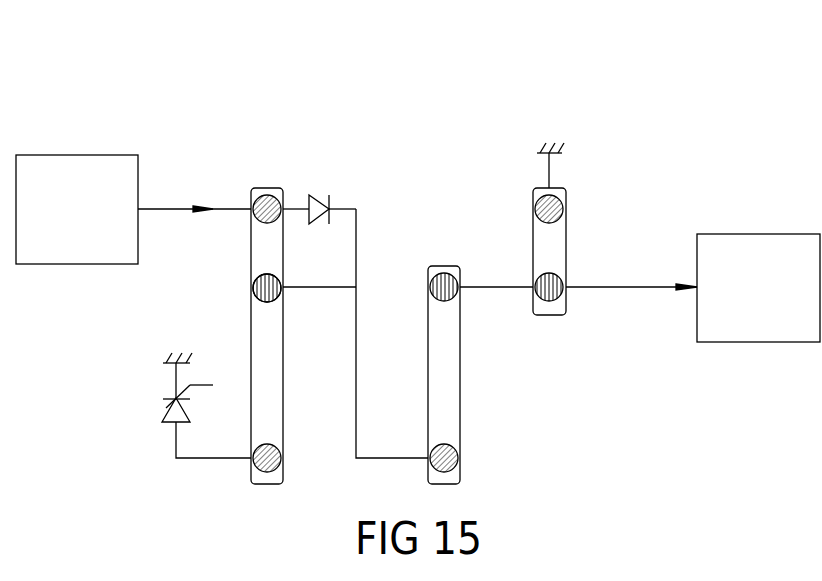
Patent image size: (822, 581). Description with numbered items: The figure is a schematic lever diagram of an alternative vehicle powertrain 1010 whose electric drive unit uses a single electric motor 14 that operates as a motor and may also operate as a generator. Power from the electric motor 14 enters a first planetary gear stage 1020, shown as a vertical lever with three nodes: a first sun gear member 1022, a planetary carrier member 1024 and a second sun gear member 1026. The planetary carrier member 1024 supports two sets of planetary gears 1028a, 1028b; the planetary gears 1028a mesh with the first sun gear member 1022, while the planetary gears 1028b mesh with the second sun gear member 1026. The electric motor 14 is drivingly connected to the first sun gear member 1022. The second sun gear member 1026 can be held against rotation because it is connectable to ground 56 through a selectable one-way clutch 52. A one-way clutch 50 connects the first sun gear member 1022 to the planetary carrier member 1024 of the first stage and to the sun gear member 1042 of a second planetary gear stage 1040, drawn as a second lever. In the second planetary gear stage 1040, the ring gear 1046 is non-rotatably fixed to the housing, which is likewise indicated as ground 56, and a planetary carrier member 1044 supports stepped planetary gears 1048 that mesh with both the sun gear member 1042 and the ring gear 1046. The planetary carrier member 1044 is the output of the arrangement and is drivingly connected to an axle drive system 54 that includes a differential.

The electric motor 14 is at (88, 220).
The axle drive system 54 is at (768, 298).
The one-way clutch 50 is at (320, 196).
The selectable one-way clutch 52 is at (168, 410).
The ground 56 is at (178, 355).
The powertrain 1010 is at (521, 89).
The first planetary gear stage 1020 is at (226, 148).
The first sun gear member 1022 is at (258, 197).
The planetary carrier member 1024 is at (343, 290).
The second sun gear member 1026 is at (277, 470).
The planetary gears 1028a is at (256, 298).
The planetary gears 1028b is at (267, 288).
The second planetary gear stage 1040 is at (463, 180).
The sun gear member 1042 is at (453, 469).
The planetary carrier member 1044 is at (526, 286).
The ring gear 1046 is at (553, 196).
The stepped planetary gears 1048 is at (555, 298).